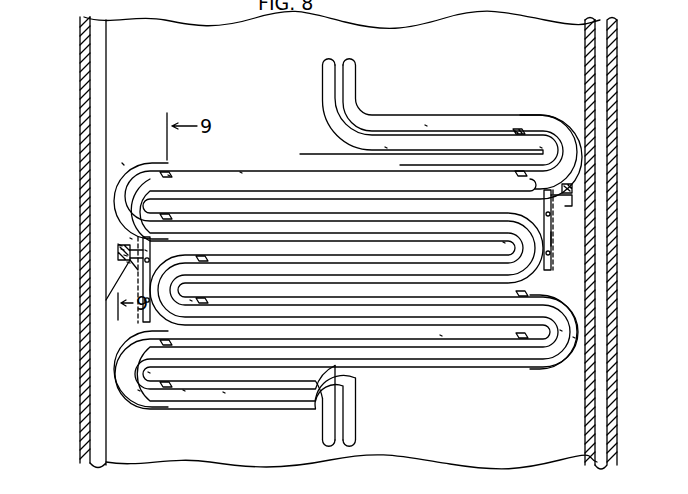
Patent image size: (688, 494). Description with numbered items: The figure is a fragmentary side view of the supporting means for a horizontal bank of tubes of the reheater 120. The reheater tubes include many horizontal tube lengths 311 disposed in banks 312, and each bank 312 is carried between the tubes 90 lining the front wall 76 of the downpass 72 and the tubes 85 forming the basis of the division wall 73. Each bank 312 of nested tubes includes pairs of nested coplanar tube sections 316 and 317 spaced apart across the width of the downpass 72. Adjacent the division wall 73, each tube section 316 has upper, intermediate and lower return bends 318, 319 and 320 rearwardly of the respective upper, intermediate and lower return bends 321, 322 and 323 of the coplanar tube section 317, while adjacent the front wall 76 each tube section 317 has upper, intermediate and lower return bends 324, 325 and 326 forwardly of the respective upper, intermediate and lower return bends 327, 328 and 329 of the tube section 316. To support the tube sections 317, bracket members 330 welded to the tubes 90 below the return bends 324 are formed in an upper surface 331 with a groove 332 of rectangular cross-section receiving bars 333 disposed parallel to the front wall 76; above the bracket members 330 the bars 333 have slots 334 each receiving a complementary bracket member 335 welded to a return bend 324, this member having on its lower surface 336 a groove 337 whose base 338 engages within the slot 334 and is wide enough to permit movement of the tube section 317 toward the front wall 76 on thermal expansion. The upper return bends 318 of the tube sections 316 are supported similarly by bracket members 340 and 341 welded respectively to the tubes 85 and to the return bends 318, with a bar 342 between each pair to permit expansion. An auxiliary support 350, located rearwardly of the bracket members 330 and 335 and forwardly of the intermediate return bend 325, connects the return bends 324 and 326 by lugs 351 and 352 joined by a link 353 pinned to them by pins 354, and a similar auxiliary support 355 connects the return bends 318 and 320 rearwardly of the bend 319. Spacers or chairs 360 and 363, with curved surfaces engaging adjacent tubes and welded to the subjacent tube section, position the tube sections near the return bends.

The downpass 72 is at (334, 55).
The division wall 73 is at (610, 58).
The front wall 76 is at (80, 27).
The tubes 85 is at (597, 97).
The tubes 90 is at (96, 59).
The reheater 120 is at (183, 390).
The horizontal tube lengths 311 is at (440, 337).
The banks 312 is at (223, 392).
The tube section 316 is at (425, 125).
The tube section 317 is at (385, 147).
The upper return bend 318 is at (557, 128).
The intermediate return bend 319 is at (503, 242).
The lower return bend 320 is at (563, 323).
The upper return bend 321 is at (540, 147).
The intermediate return bend 322 is at (552, 312).
The lower return bend 323 is at (573, 337).
The upper return bend 324 is at (133, 172).
The intermediate return bend 325 is at (127, 352).
The lower return bend 326 is at (137, 392).
The upper return bend 327 is at (127, 258).
The intermediate return bend 328 is at (190, 300).
The lower return bend 329 is at (147, 370).
The bracket member 330 is at (146, 268).
The upper surface 331 is at (137, 267).
The groove 332 is at (125, 262).
The bar 333 is at (118, 252).
The slot 334 is at (124, 252).
The bracket member 335 is at (120, 250).
The lower surface 336 is at (120, 247).
The groove 337 is at (125, 170).
The base 338 is at (118, 248).
The bracket member 340 is at (554, 211).
The bracket member 341 is at (575, 195).
The bar 342 is at (576, 204).
The auxiliary support 350 is at (145, 306).
The lug 351 is at (130, 240).
The lug 352 is at (160, 332).
The link 353 is at (150, 252).
The pins 354 is at (143, 300).
The auxiliary support 355 is at (551, 238).
The spacer or chair 360 is at (160, 178).
The spacer or chair 363 is at (515, 133).